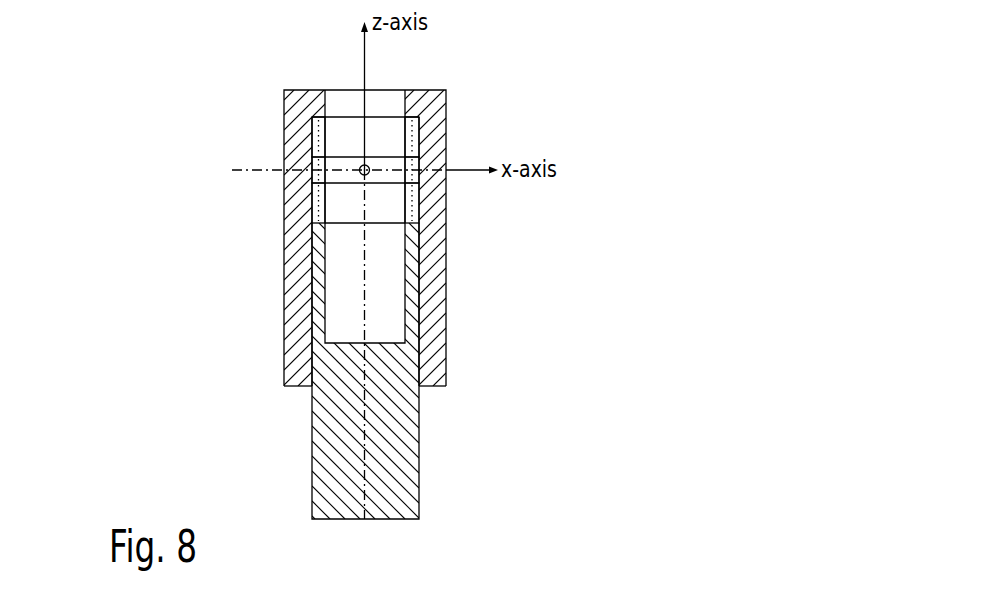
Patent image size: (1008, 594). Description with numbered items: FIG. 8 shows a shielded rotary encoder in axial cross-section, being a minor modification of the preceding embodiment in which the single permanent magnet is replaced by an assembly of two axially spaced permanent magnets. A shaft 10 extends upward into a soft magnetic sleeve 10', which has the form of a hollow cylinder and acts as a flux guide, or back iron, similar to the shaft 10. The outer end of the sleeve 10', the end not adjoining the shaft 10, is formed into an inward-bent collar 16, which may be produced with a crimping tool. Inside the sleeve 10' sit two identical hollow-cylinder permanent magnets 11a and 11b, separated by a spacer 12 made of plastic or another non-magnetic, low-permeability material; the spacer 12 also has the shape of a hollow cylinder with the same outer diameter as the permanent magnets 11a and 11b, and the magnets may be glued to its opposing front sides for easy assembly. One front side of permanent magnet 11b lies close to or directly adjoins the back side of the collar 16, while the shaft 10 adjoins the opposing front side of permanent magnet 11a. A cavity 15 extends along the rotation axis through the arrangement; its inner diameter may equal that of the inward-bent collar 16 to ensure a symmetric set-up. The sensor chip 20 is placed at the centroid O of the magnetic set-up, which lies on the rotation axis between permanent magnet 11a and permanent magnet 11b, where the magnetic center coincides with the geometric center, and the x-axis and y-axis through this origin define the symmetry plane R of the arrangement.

The shaft 10 is at (442, 371).
The soft magnetic sleeve 10' is at (528, 238).
The permanent magnet 11a is at (421, 214).
The permanent magnet 11b is at (419, 142).
The spacer 12 is at (419, 180).
The cavity 15 is at (340, 258).
The inward-bent collar 16 is at (411, 90).
The sensor chip 20 is at (361, 167).
The symmetry plane R is at (257, 168).
The centroid O is at (360, 172).